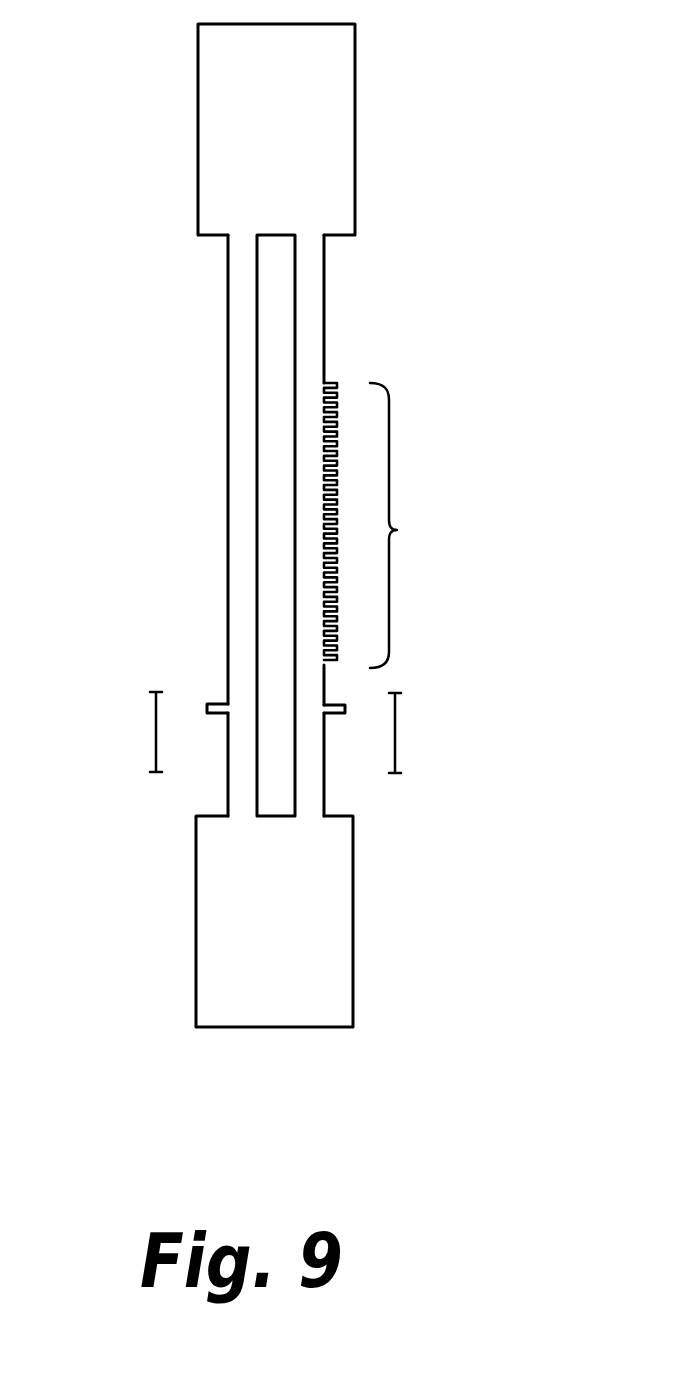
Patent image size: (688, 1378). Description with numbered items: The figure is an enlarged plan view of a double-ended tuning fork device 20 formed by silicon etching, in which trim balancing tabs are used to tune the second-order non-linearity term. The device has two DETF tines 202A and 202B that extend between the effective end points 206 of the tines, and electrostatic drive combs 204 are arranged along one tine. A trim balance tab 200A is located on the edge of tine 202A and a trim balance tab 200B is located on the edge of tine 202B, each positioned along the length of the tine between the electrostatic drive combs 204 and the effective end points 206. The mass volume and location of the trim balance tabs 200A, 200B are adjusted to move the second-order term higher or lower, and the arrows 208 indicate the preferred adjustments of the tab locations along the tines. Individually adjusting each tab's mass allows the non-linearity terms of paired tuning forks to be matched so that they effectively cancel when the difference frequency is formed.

The sensor device 20 is at (228, 523).
The effective end points of the DETF tines 206 is at (198, 167).
The DETF tine 202A is at (325, 323).
The DETF tine 202B is at (228, 410).
The electrostatic drive combs 204 is at (397, 527).
The trim balance tab 200A is at (345, 710).
The trim balance tab 200B is at (207, 708).
The arrows 208 is at (156, 730).